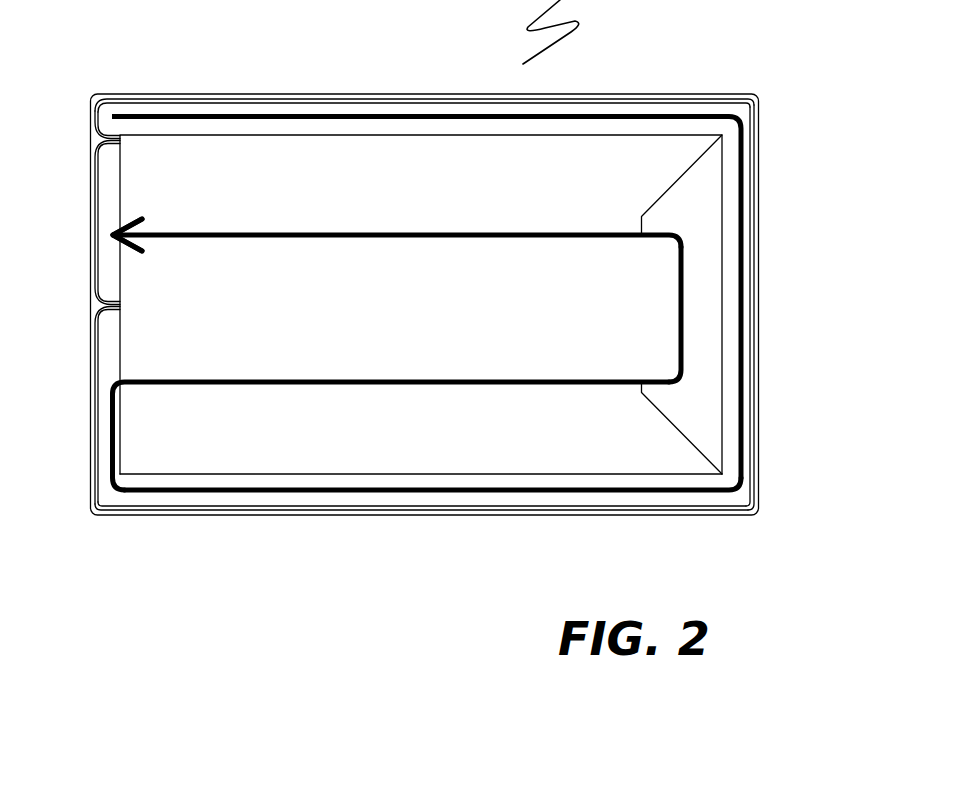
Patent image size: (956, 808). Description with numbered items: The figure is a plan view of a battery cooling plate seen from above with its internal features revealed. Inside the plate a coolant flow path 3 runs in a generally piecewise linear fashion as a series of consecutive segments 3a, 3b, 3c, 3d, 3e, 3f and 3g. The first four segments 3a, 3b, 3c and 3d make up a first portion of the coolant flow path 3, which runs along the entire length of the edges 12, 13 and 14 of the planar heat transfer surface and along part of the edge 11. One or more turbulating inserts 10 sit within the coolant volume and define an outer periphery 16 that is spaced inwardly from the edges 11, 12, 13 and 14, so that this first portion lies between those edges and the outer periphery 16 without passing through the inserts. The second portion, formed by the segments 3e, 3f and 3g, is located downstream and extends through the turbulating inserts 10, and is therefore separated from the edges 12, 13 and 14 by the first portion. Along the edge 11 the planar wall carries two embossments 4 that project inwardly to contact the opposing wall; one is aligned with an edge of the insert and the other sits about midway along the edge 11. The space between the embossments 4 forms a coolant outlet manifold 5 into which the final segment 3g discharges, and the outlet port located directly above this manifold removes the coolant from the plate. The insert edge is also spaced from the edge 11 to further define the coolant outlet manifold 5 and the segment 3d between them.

The coolant flow path 3 is at (452, 297).
The flow path segment 3a is at (376, 115).
The flow path segment 3b is at (743, 235).
The flow path segment 3c is at (492, 492).
The flow path segment 3d is at (112, 432).
The flow path segment 3e is at (262, 380).
The flow path segment 3f is at (681, 311).
The flow path segment 3g is at (490, 232).
The embossments 4 is at (108, 141).
The coolant outlet manifold 5 is at (110, 238).
The turbulating inserts 10 is at (590, 165).
The edge 11 is at (90, 463).
The edge 12 is at (275, 92).
The edge 13 is at (759, 306).
The edge 14 is at (638, 515).
The outer periphery 16 is at (275, 477).